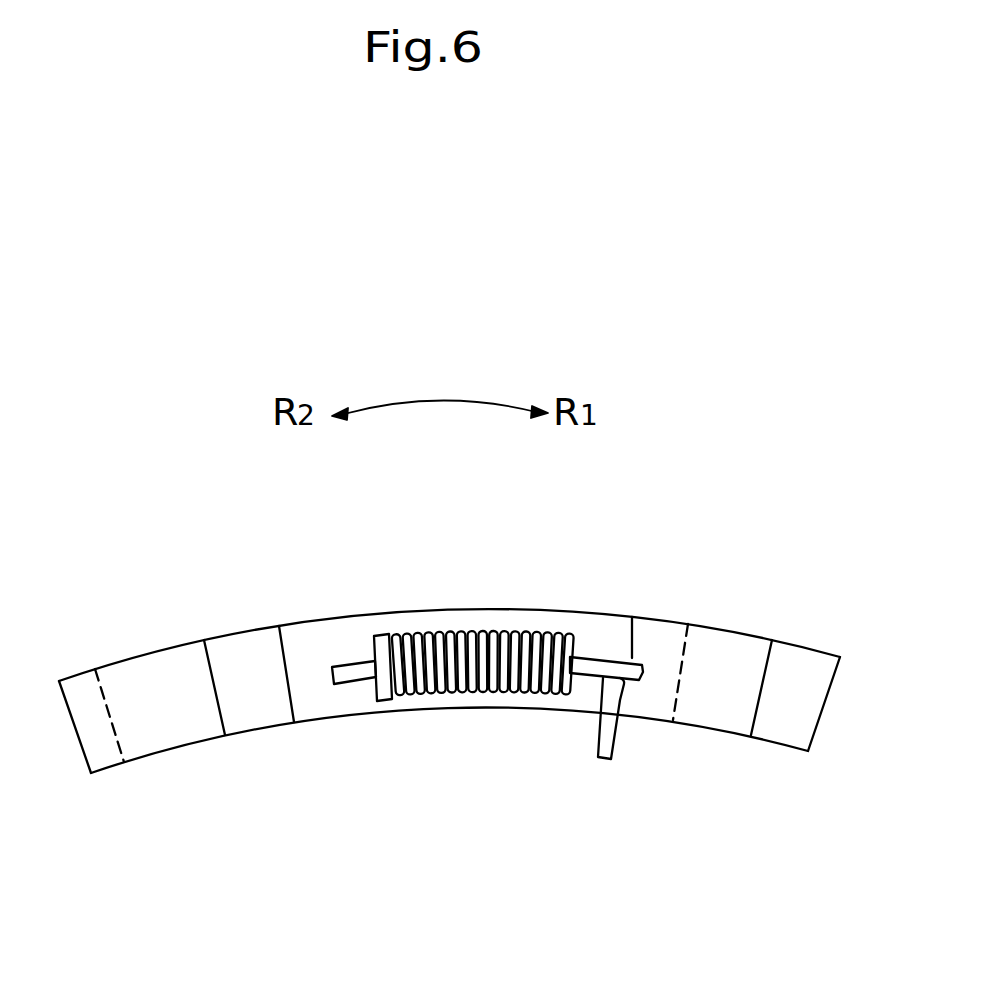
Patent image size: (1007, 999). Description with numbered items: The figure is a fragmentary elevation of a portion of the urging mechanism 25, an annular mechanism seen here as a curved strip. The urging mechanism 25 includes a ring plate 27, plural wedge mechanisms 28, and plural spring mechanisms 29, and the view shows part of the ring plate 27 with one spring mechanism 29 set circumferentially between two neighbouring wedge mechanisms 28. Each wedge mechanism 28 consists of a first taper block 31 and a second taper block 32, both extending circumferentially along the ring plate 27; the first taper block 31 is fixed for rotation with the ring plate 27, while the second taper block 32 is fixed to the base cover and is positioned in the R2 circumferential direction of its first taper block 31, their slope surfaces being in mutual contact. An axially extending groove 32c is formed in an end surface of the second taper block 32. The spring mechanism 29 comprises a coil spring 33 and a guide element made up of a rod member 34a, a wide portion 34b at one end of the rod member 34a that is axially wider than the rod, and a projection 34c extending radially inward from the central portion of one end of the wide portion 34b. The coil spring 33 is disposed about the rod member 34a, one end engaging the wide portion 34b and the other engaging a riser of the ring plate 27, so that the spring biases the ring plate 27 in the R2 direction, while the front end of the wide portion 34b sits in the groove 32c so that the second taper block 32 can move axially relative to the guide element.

The urging mechanism 25 is at (623, 473).
The ring plate 27 is at (325, 707).
The wedge mechanism 28 is at (188, 610).
The spring mechanism 29 is at (493, 630).
The first taper block 31 is at (240, 655).
The second taper block 32 is at (145, 677).
The groove 32c is at (635, 678).
The coil spring 33 is at (474, 592).
The rod member 34a is at (335, 668).
The wide portion 34b is at (594, 664).
The projection 34c is at (616, 760).